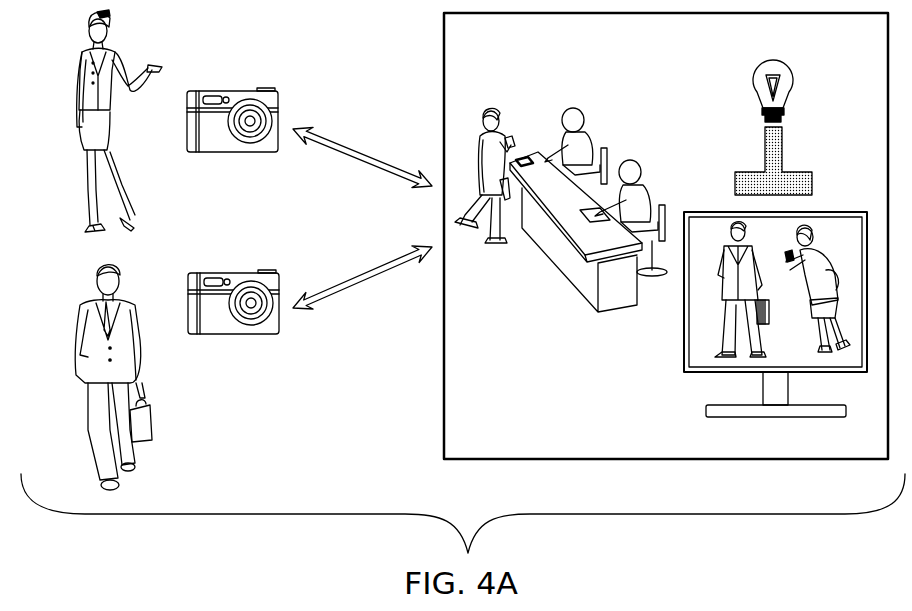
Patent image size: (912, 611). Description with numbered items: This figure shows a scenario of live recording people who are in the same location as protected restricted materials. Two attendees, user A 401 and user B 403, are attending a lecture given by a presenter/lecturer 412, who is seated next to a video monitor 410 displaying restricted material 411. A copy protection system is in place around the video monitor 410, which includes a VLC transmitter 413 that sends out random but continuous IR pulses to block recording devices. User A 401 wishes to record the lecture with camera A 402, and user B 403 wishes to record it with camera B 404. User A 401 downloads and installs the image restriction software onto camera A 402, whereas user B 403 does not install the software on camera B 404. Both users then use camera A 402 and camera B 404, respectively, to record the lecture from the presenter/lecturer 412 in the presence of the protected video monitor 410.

The user A 401 is at (72, 100).
The camera A 402 is at (238, 90).
The user B 403 is at (80, 312).
The camera B 404 is at (238, 272).
The video monitor 410 is at (808, 182).
The restricted material 411 is at (703, 320).
The presenter/lecturer 412 is at (583, 113).
The VLC transmitter 413 is at (795, 80).